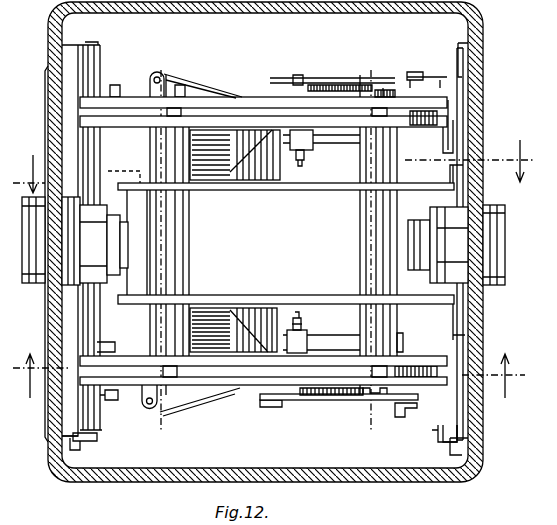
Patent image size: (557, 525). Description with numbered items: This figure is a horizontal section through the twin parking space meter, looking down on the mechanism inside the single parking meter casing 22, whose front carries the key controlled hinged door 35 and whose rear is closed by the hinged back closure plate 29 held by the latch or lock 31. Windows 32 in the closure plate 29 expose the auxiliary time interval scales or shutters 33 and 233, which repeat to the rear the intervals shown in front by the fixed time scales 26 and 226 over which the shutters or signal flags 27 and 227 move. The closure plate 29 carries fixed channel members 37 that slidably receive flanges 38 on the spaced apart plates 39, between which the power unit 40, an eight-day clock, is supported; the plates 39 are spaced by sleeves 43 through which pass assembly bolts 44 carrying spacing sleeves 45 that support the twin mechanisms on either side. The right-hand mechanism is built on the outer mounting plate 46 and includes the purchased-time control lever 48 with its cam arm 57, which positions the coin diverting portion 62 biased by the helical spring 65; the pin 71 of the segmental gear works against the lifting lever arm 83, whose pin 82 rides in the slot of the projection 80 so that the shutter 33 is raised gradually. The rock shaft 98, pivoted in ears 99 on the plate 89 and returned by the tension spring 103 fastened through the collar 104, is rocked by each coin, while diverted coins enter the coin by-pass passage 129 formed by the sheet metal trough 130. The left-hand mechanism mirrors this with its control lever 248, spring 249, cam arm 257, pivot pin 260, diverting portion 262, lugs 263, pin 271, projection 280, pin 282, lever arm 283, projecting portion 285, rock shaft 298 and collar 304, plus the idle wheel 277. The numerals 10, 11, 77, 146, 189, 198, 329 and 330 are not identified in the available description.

The parking meter casing 22 is at (478, 26).
The key controlled hinged door 35 is at (46, 99).
The fixed time scale 226 is at (71, 56).
The fixed time scale 26 is at (68, 416).
The shutter or signal flag 27 is at (81, 450).
The shutter or signal flag 227 is at (101, 46).
The idle wheel 277 is at (114, 85).
The plate 89 is at (133, 350).
The spacing sleeves 45 is at (168, 143).
The sleeves 43 is at (186, 203).
The power unit 40 is at (230, 188).
The back closure plate 29 is at (464, 78).
The auxiliary time interval scale or shutter 233 is at (469, 50).
The fixed channel members 37 is at (455, 148).
The flanges 38 is at (464, 191).
The cam arm 257 is at (237, 97).
The rail 189 is at (456, 123).
The toothed member 146 is at (439, 106).
The spaced apart plates 39 is at (444, 169).
The cam arm 57 is at (240, 396).
The latch or lock 31 is at (493, 243).
The helical spring 65 is at (287, 241).
The block 330 is at (252, 172).
The coin by-pass passage 129 is at (262, 247).
The sheet metal trough 130 is at (248, 311).
The member 329 is at (220, 218).
The rock shaft 298 is at (340, 147).
The collar 304 is at (300, 152).
The rock shaft 98 is at (338, 350).
The tension spring 103 is at (272, 192).
The collar 104 is at (300, 336).
The ears 99 is at (399, 350).
The lugs 263 is at (157, 73).
The coin diverting portion 262 is at (201, 83).
The vertical pivot pin 260 is at (166, 74).
The projecting portion 285 is at (273, 78).
The pin 271 is at (299, 77).
The purchased-time control lever 248 is at (321, 76).
The tension spring 249 is at (343, 88).
The toothed member 198 is at (391, 95).
The lifting lever arm 283 is at (382, 80).
The pin 282 is at (417, 72).
The projection 280 is at (431, 75).
The outer mounting plate 46 is at (126, 380).
The coin diverting portion 62 is at (192, 393).
The block 77 is at (110, 399).
The assembly bolts 44 is at (165, 406).
The pin 71 is at (293, 411).
The purchased-time control lever 48 is at (316, 392).
The lifting lever arm 83 is at (373, 409).
The projection 80 is at (413, 412).
The auxiliary time interval scale or shutter 33 is at (440, 431).
The window 32 is at (462, 411).
The pin 82 is at (407, 418).
The section line 11 is at (280, 166).
The section line 10 is at (272, 376).